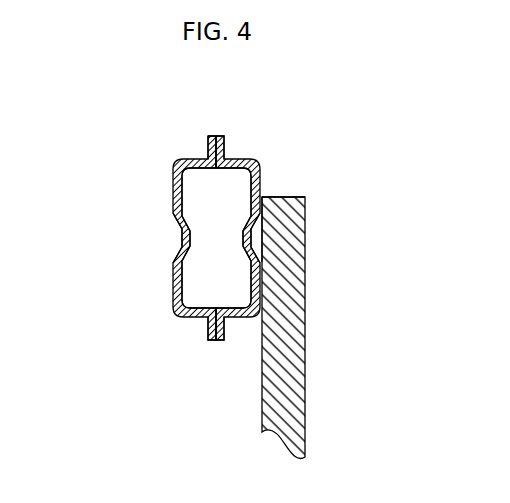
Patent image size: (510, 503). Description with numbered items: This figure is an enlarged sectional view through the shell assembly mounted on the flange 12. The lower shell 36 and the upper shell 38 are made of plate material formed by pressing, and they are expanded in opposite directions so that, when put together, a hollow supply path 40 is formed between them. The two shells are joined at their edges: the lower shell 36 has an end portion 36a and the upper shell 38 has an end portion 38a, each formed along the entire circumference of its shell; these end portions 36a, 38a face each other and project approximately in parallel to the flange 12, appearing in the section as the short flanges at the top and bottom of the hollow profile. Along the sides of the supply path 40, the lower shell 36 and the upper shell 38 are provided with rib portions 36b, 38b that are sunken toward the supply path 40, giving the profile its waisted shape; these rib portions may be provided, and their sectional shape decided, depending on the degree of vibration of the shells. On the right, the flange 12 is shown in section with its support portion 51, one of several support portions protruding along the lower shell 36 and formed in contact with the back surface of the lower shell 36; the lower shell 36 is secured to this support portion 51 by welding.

The flange 12 is at (290, 388).
The support portion 51 is at (295, 211).
The lower shell 36 is at (258, 163).
The end portion 36a is at (226, 158).
The rib portion 36b is at (260, 236).
The upper shell 38 is at (173, 190).
The end portion 38a is at (208, 148).
The rib portion 38b is at (180, 237).
The supply path 40 is at (210, 268).